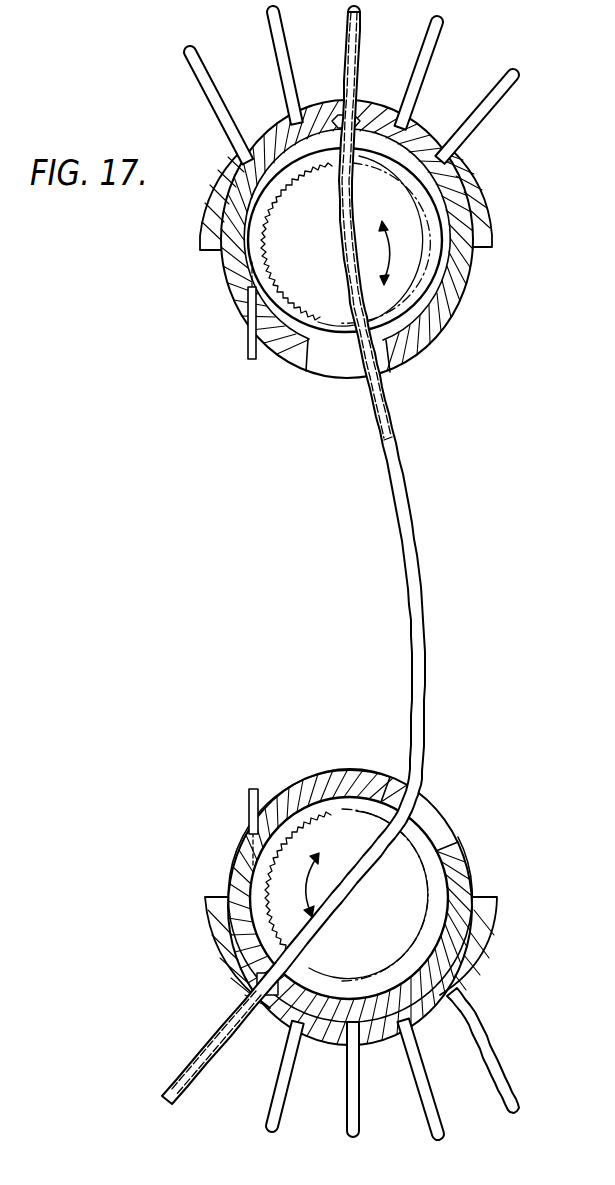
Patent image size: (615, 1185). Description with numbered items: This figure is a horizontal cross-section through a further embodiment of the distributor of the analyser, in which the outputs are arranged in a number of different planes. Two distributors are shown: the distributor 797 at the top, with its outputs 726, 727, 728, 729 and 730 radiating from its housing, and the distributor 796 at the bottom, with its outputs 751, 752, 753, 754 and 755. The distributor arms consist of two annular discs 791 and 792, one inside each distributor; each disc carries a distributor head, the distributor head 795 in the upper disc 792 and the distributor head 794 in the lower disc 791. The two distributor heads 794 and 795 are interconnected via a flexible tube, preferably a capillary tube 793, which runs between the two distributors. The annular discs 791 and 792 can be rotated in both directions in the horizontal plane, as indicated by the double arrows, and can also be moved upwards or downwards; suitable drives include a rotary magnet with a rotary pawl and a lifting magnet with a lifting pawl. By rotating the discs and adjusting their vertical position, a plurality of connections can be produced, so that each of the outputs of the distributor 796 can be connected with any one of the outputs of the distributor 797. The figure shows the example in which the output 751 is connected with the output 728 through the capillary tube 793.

The output 726 is at (194, 68).
The output 727 is at (270, 46).
The output 728 is at (346, 33).
The output 729 is at (419, 57).
The output 730 is at (495, 95).
The output 751 is at (181, 1076).
The output 752 is at (265, 1105).
The output 753 is at (347, 1097).
The output 754 is at (418, 1098).
The output 755 is at (498, 1093).
The annular disc 791 is at (463, 866).
The annular disc 792 is at (470, 297).
The capillary tube 793 is at (407, 485).
The distributor head 794 is at (256, 980).
The distributor head 795 is at (340, 125).
The distributor 796 is at (493, 938).
The distributor 797 is at (494, 226).